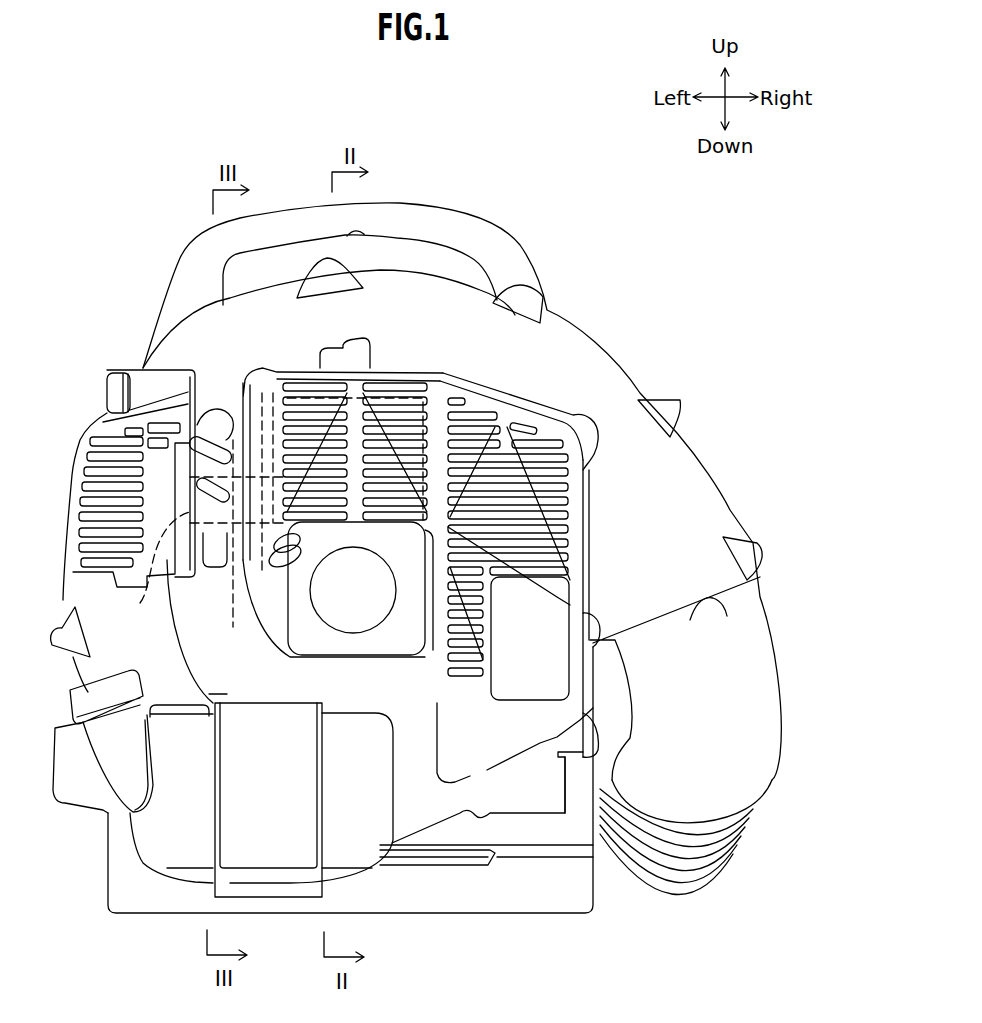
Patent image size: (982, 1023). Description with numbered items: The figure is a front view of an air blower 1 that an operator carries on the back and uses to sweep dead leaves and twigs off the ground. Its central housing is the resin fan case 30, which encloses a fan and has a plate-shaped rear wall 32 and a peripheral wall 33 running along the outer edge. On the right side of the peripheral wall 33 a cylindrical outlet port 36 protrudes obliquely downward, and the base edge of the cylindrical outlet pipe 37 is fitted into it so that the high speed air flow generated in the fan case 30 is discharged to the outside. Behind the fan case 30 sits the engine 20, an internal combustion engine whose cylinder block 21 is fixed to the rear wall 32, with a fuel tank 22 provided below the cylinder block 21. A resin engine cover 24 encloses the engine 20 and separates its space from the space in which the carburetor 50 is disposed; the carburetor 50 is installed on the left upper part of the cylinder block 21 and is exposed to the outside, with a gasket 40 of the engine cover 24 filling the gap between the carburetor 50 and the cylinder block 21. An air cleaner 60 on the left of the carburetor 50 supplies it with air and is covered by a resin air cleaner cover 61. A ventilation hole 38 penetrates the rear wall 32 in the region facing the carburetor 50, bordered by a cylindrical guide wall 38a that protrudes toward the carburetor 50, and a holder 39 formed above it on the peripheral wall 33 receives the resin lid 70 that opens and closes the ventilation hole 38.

The air blower 1 is at (556, 128).
The engine 20 is at (398, 677).
The cylinder block 21 is at (397, 398).
The fuel tank 22 is at (160, 835).
The engine cover 24 is at (530, 425).
The fan case 30 is at (633, 363).
The rear wall 32 is at (427, 703).
The peripheral wall 33 is at (470, 310).
The outlet port 36 is at (750, 582).
The outlet pipe 37 is at (740, 680).
The ventilation hole 38 is at (140, 603).
The guide wall 38a is at (327, 525).
The holder 39 is at (205, 440).
The gasket 40 is at (243, 398).
The carburetor 50 is at (213, 567).
The air cleaner 60 is at (172, 590).
The air cleaner cover 61 is at (107, 430).
The lid 70 is at (145, 368).